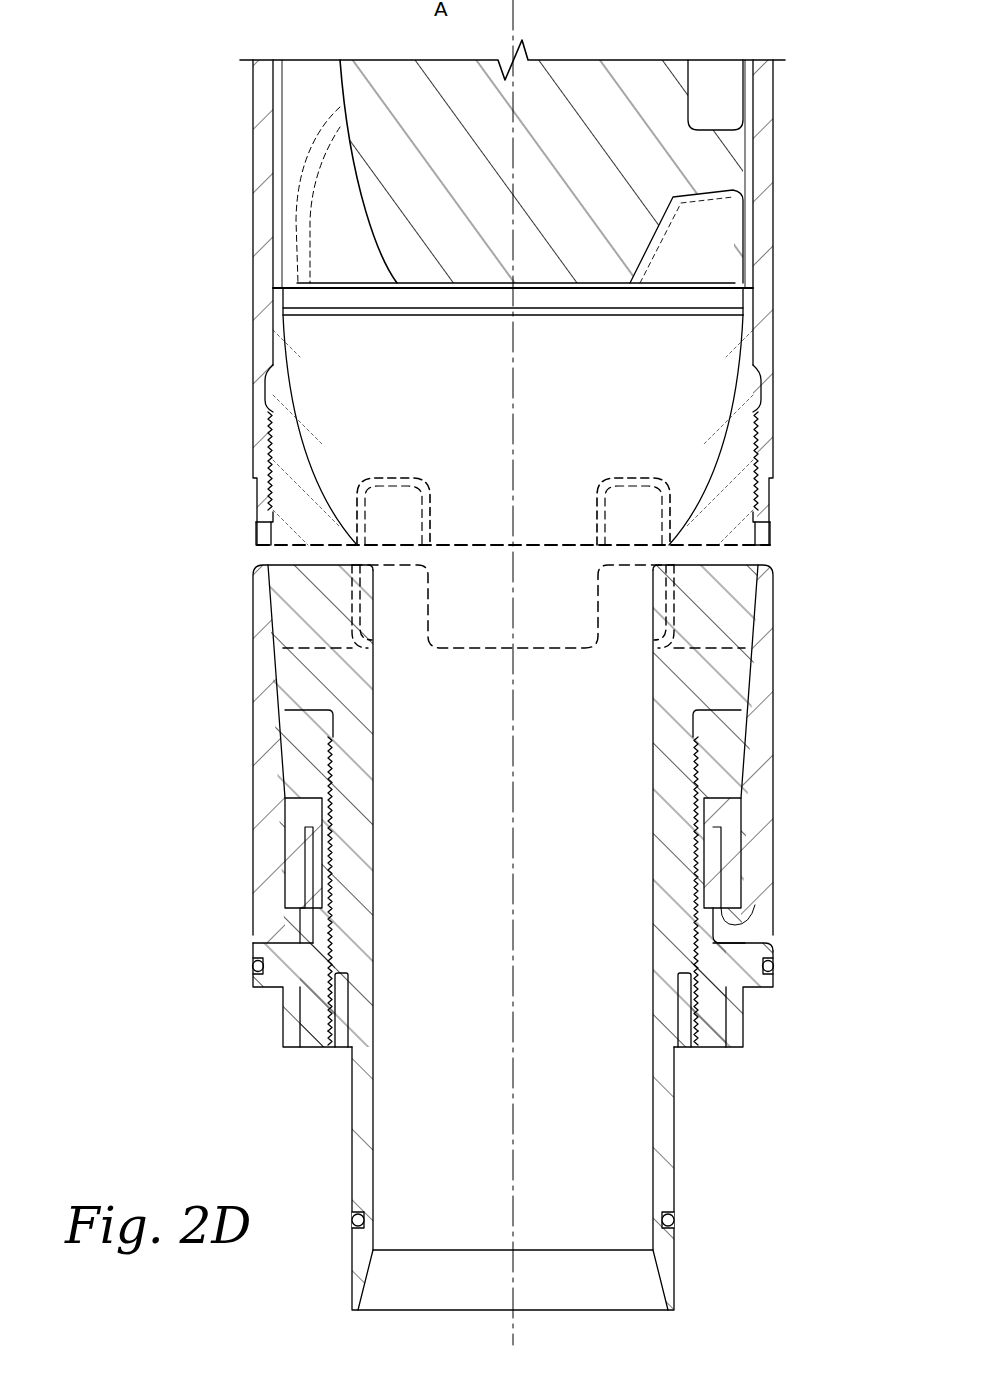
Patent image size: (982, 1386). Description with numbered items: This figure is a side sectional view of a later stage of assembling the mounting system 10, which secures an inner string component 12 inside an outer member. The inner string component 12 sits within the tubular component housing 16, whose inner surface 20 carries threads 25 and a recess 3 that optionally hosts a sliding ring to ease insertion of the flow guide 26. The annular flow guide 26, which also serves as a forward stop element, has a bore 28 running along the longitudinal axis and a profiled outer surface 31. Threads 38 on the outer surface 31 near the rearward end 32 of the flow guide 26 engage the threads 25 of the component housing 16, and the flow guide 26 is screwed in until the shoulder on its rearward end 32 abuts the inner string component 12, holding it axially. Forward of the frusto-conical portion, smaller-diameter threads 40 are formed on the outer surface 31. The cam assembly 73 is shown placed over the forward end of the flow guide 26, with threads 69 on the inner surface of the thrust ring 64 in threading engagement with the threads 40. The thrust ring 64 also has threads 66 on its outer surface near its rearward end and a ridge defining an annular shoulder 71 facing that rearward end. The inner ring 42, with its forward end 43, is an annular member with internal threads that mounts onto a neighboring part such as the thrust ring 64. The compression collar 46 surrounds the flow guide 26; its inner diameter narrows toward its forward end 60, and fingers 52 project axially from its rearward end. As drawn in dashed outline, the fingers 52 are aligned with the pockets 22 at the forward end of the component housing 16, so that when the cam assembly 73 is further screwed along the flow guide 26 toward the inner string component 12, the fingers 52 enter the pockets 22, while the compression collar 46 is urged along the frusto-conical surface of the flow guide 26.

The mounting system 10 is at (140, 203).
The inner string component 12 is at (633, 112).
The component housing 16 is at (758, 172).
The rearward end 32 is at (686, 282).
The inner surface 20 is at (753, 335).
The recess 3 is at (757, 386).
The threads 25 is at (757, 437).
The threads 38 is at (757, 455).
The outer surface 31 is at (757, 508).
The pockets 22 is at (428, 505).
The fingers 52 is at (608, 590).
The threads 40 is at (700, 760).
The compression collar 46 is at (248, 711).
The inner ring 42 is at (282, 840).
The threads 66 is at (715, 882).
The forward end 43 is at (730, 922).
The annular shoulder 71 is at (750, 940).
The forward end 60 is at (776, 970).
The threads 69 is at (700, 878).
The thrust ring 64 is at (250, 991).
The cam assembly 73 is at (782, 1048).
The bore 28 is at (617, 1082).
The flow guide 26 is at (680, 1167).